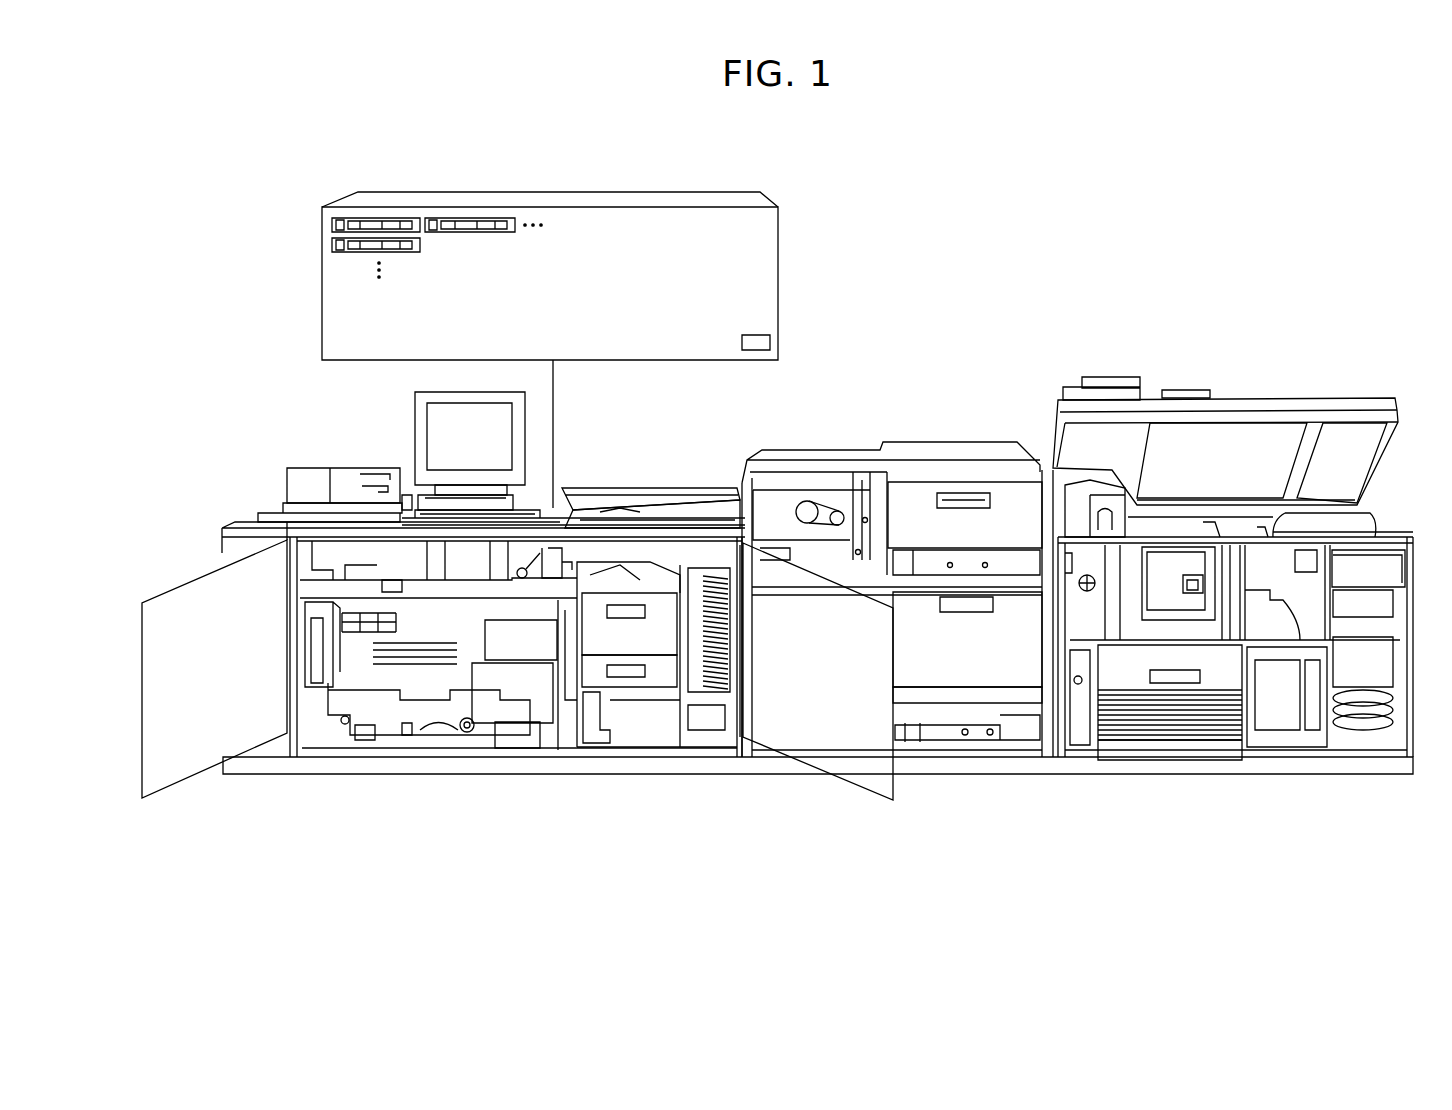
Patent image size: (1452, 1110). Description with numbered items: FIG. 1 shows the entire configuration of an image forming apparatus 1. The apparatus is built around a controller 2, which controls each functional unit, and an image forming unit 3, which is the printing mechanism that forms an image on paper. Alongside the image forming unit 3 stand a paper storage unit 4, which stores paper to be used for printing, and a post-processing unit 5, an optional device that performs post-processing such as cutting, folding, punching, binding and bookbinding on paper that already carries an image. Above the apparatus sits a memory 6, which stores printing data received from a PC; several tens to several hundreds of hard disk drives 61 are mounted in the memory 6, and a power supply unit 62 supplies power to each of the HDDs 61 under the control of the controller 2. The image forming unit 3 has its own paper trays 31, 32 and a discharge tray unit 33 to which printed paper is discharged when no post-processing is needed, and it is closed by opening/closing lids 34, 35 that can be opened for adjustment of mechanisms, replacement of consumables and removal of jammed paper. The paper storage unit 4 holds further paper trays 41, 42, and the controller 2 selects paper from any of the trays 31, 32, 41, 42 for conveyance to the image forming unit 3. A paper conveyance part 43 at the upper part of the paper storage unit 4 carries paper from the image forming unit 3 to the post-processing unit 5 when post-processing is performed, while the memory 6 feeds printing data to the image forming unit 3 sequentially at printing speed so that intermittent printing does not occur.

The image forming apparatus 1 is at (1306, 309).
The controller 2 is at (396, 427).
The image forming unit 3 is at (223, 802).
The paper storage unit 4 is at (1058, 800).
The post-processing unit 5 is at (1415, 796).
The memory 6 is at (772, 173).
The paper tray 31 is at (658, 668).
The paper tray 32 is at (662, 613).
The discharge tray unit 33 is at (718, 667).
The opening/closing lid 34 is at (188, 715).
The opening/closing lid 35 is at (672, 490).
The paper tray 41 is at (1010, 665).
The paper tray 42 is at (1008, 520).
The paper conveyance part 43 is at (790, 510).
The hard disk drive 61 is at (332, 226).
The power supply unit 62 is at (757, 337).